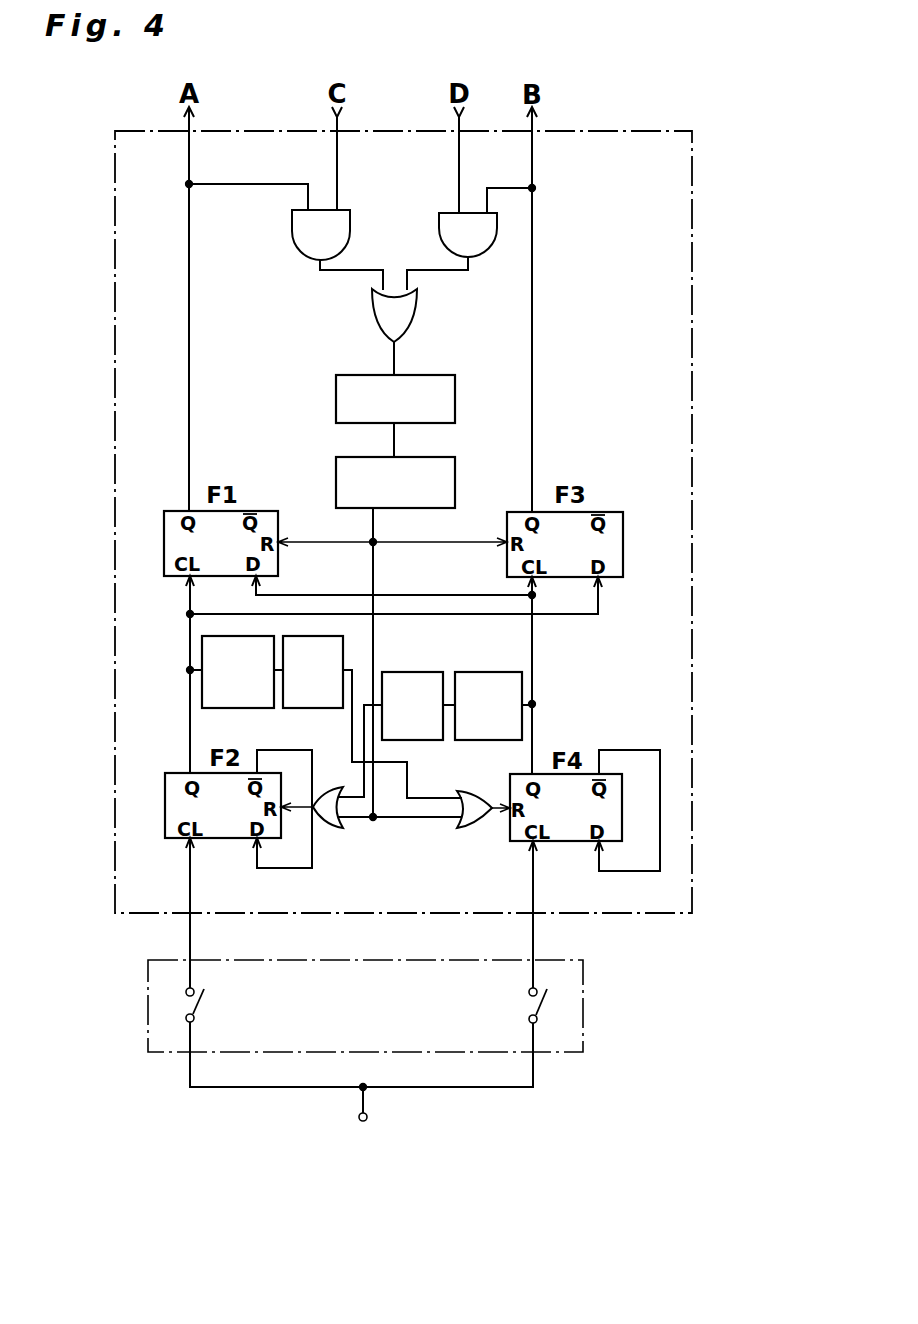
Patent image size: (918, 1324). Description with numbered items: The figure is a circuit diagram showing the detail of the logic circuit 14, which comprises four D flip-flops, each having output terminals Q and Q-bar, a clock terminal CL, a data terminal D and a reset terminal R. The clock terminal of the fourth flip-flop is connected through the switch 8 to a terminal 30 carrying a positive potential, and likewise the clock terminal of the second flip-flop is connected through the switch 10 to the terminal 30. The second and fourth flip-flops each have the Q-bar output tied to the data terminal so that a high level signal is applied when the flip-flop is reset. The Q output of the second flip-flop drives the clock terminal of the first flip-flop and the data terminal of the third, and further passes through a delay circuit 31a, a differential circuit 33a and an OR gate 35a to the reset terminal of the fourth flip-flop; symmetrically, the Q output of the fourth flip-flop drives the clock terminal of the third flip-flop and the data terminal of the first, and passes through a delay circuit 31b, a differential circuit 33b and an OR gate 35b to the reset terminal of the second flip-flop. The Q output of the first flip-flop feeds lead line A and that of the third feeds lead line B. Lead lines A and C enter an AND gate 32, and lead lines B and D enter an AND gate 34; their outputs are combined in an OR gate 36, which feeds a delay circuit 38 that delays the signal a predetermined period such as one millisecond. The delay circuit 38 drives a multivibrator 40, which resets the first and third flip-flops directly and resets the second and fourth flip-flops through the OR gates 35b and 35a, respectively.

The logic circuit 14 is at (627, 133).
The AND gate 32 is at (321, 235).
The AND gate 34 is at (468, 235).
The OR gate 36 is at (394, 315).
The delay circuit 38 is at (443, 393).
The multivibrator 40 is at (443, 468).
The delay circuit 31a is at (238, 672).
The differential circuit 33a is at (313, 672).
The differential circuit 33b is at (412, 706).
The delay circuit 31b is at (488, 706).
The OR gate 35a is at (471, 826).
The OR gate 35b is at (330, 826).
The switch 10 is at (190, 1000).
The switch 8 is at (540, 1005).
The terminal 30 is at (363, 1121).